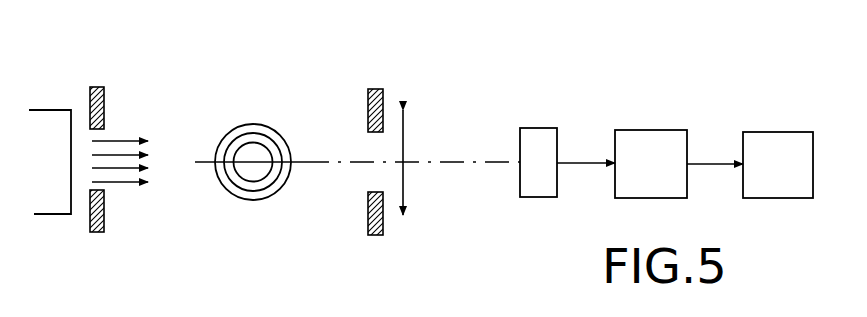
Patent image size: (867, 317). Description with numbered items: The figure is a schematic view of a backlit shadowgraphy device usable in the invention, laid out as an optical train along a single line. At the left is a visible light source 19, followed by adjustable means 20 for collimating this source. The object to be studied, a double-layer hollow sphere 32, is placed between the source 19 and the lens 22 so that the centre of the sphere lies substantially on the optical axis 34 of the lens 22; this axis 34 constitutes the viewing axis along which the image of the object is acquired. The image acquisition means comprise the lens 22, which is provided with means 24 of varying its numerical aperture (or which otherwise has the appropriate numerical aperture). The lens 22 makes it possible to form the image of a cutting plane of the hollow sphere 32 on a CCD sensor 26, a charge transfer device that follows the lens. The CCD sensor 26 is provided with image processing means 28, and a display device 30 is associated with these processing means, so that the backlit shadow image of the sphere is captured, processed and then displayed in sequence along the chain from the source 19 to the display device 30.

The visible light source 19 is at (51, 118).
The adjustable means for collimating the source 20 is at (105, 108).
The double-layer hollow sphere 32 is at (248, 124).
The means of varying the numerical aperture 24 is at (366, 105).
The lens 22 is at (408, 117).
The optical axis 34 is at (443, 163).
The CCD sensor 26 is at (547, 137).
The image processing means 28 is at (675, 137).
The display device 30 is at (788, 138).